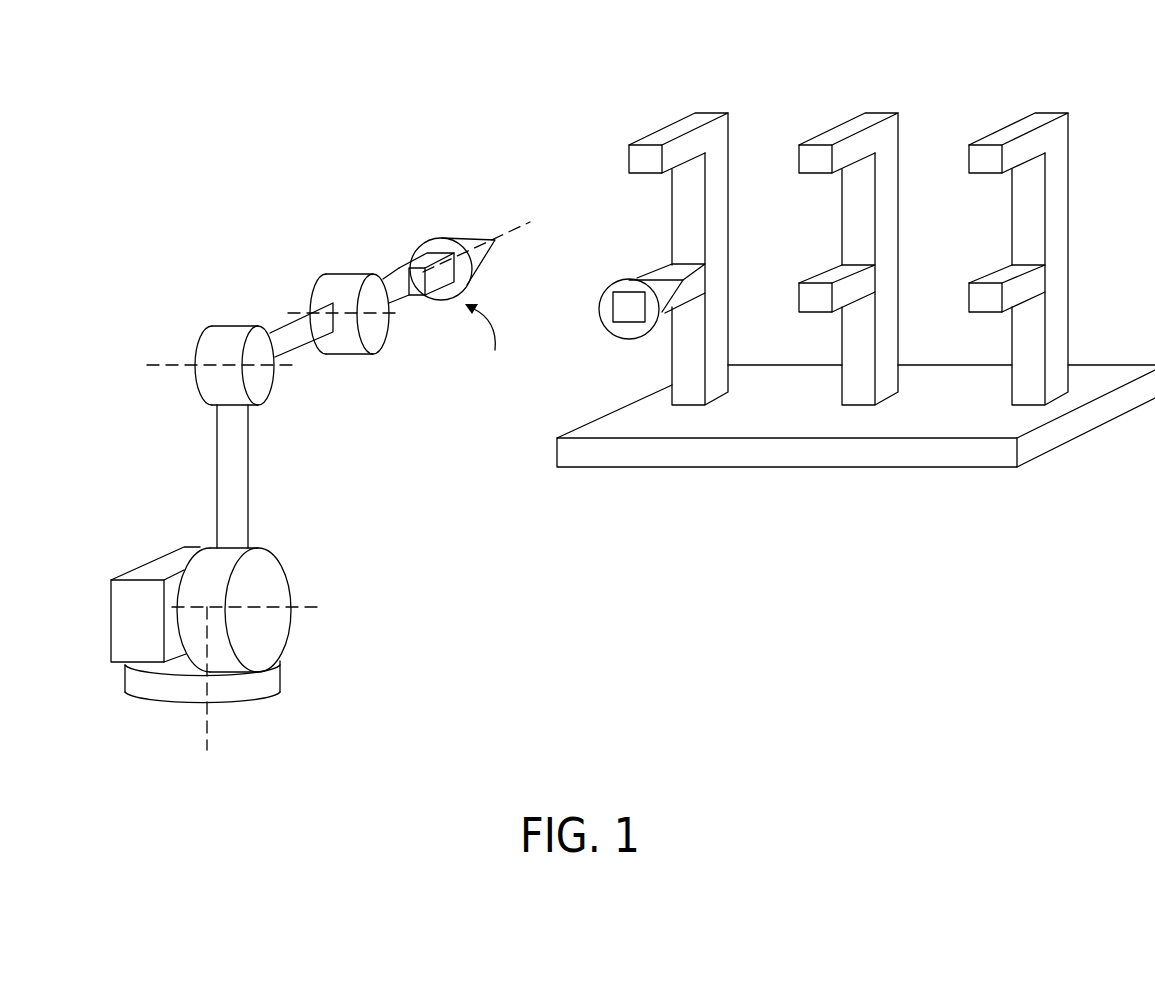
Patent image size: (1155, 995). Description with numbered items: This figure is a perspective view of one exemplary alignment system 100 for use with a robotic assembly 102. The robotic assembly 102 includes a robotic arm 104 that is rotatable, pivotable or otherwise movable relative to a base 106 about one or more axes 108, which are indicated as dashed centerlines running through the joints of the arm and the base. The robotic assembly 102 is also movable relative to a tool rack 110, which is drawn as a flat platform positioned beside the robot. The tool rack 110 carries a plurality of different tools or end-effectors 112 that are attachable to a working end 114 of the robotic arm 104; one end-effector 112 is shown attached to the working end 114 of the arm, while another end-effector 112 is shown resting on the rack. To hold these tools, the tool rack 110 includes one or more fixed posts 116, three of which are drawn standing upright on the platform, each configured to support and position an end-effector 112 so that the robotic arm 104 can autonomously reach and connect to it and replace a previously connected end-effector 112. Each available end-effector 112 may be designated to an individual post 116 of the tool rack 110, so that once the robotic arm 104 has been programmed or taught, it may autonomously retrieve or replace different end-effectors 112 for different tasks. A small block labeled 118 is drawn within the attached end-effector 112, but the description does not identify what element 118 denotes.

The alignment system 100 is at (398, 80).
The robotic assembly 102 is at (129, 430).
The robotic arm 104 is at (287, 327).
The base 106 is at (257, 688).
The axes 108 is at (170, 366).
The tool rack 110 is at (1057, 348).
The end-effector 112 is at (423, 243).
The working end 114 is at (488, 342).
The fixed post 116 is at (663, 133).
The tool block 118 is at (427, 260).